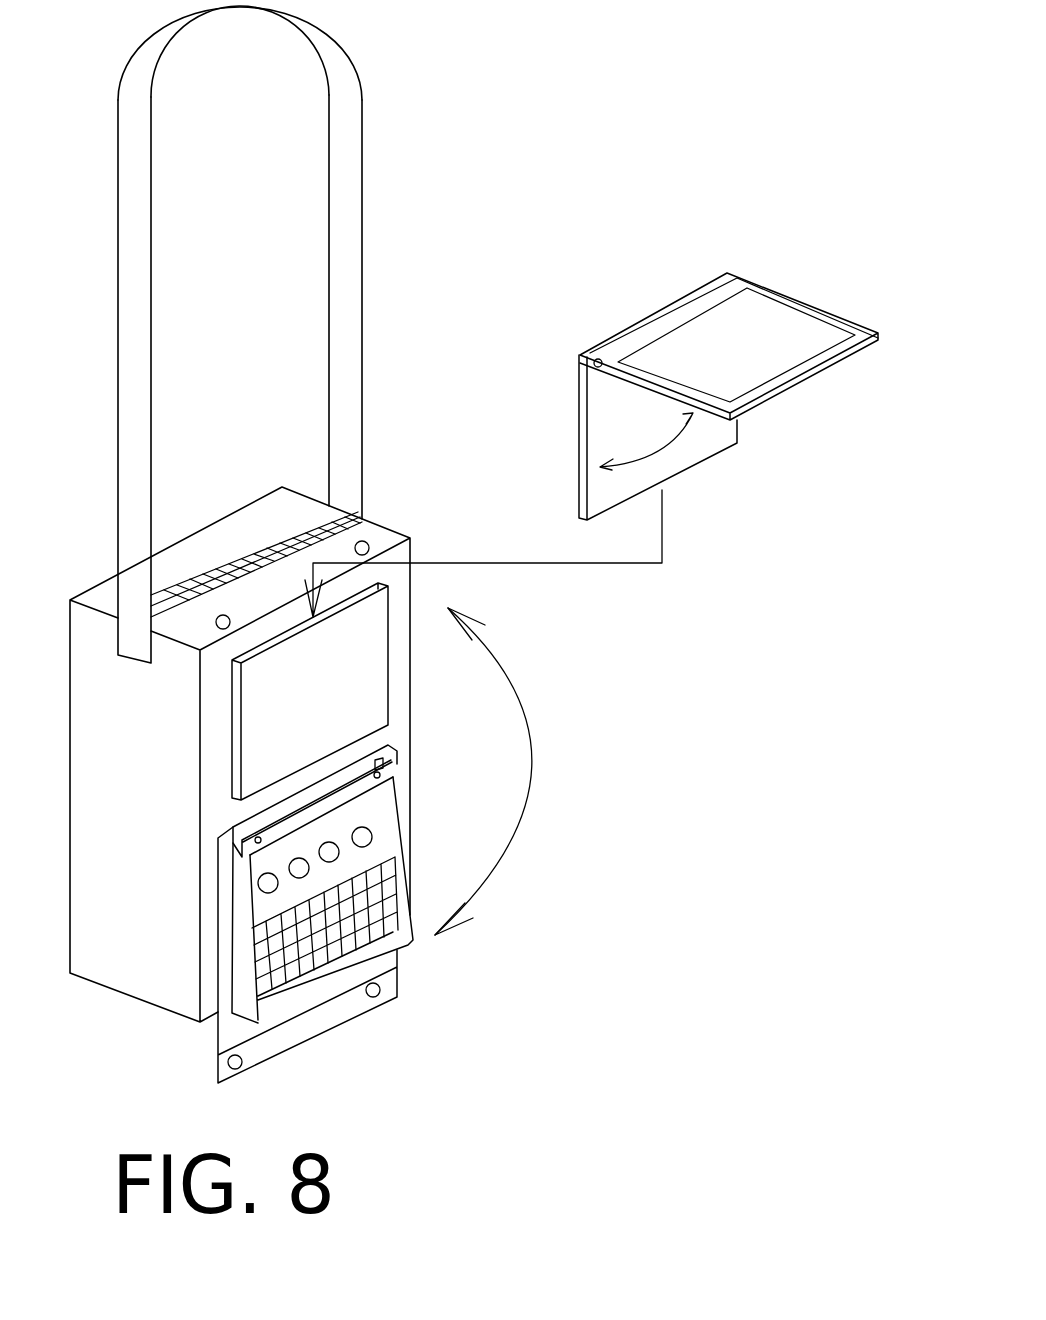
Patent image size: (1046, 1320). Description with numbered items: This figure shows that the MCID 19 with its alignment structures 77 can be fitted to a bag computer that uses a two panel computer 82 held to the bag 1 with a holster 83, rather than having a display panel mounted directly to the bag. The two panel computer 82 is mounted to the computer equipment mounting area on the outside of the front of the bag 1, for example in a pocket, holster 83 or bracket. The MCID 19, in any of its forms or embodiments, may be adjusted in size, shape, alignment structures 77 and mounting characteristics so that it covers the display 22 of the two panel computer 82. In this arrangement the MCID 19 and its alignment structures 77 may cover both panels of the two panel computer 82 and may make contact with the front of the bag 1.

The bag 1 is at (307, 488).
The MCID 19 is at (283, 900).
The display 22 is at (805, 298).
The alignment structures 77 is at (306, 988).
The two panel computer 82 is at (587, 423).
The holster 83 is at (308, 675).